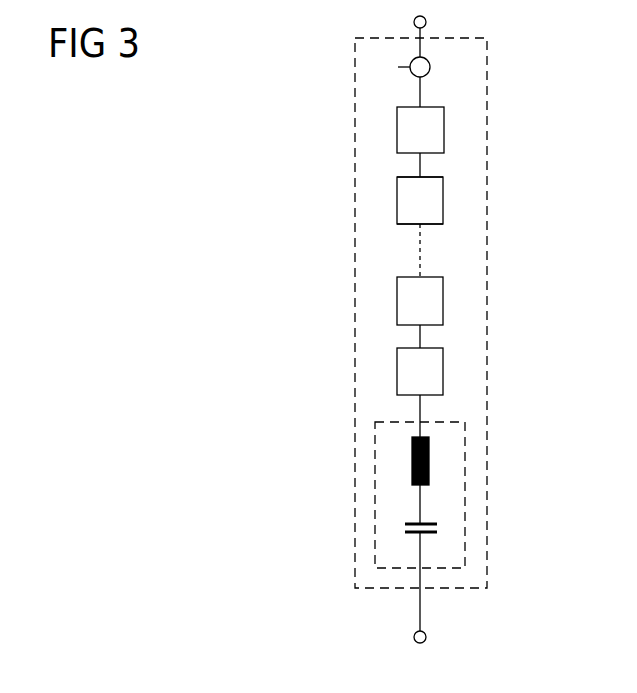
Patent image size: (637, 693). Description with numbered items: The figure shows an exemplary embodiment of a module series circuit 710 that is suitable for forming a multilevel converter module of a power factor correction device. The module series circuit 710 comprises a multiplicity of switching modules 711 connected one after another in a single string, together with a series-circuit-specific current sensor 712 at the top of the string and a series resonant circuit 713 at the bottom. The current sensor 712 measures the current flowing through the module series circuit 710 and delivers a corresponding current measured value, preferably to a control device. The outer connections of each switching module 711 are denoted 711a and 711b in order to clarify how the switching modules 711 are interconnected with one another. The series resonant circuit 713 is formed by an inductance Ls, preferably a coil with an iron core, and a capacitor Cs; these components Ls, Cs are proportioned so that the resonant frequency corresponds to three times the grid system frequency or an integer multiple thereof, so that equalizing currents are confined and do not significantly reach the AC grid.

The module series circuit 710 is at (355, 313).
The switching module 711 is at (444, 130).
The outer connection of switching module 711a is at (418, 178).
The outer connection of switching module 711b is at (418, 223).
The series-circuit-specific current sensor 712 is at (430, 67).
The series resonant circuit 713 is at (375, 494).
The inductance Ls is at (429, 460).
The capacitor Cs is at (437, 524).